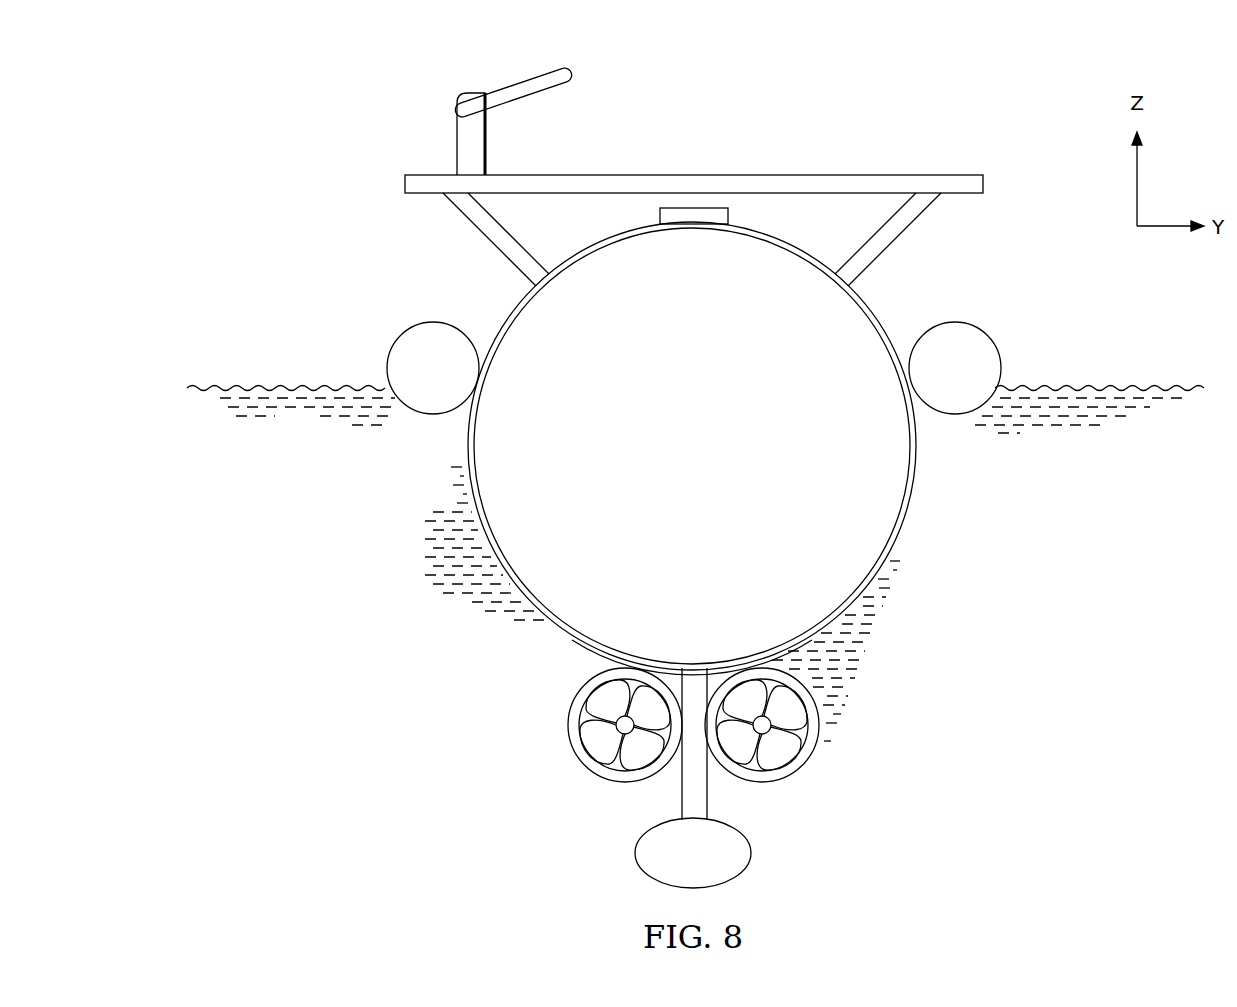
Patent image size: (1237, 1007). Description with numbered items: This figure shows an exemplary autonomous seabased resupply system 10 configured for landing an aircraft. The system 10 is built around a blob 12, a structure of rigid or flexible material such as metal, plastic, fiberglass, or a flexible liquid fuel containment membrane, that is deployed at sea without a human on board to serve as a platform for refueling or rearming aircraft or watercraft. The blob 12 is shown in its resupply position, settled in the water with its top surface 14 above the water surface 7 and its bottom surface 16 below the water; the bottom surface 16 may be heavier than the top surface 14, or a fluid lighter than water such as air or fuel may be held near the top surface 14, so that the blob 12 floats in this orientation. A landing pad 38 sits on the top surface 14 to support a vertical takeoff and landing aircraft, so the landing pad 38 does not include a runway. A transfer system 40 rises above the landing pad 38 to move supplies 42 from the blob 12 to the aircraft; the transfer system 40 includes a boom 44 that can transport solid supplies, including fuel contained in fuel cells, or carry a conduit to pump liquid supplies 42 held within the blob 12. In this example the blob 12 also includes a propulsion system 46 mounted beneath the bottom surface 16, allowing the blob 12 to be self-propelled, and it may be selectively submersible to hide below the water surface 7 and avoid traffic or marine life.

The water surface 7 is at (196, 389).
The autonomous seabased resupply system 10 is at (946, 90).
The blob 12 is at (918, 482).
The top surface 14 is at (596, 248).
The bottom surface 16 is at (574, 644).
The landing pad 38 is at (836, 174).
The transfer system 40 is at (458, 133).
The supplies 42 is at (692, 447).
The boom 44 is at (513, 80).
The propulsion system 46 is at (772, 782).